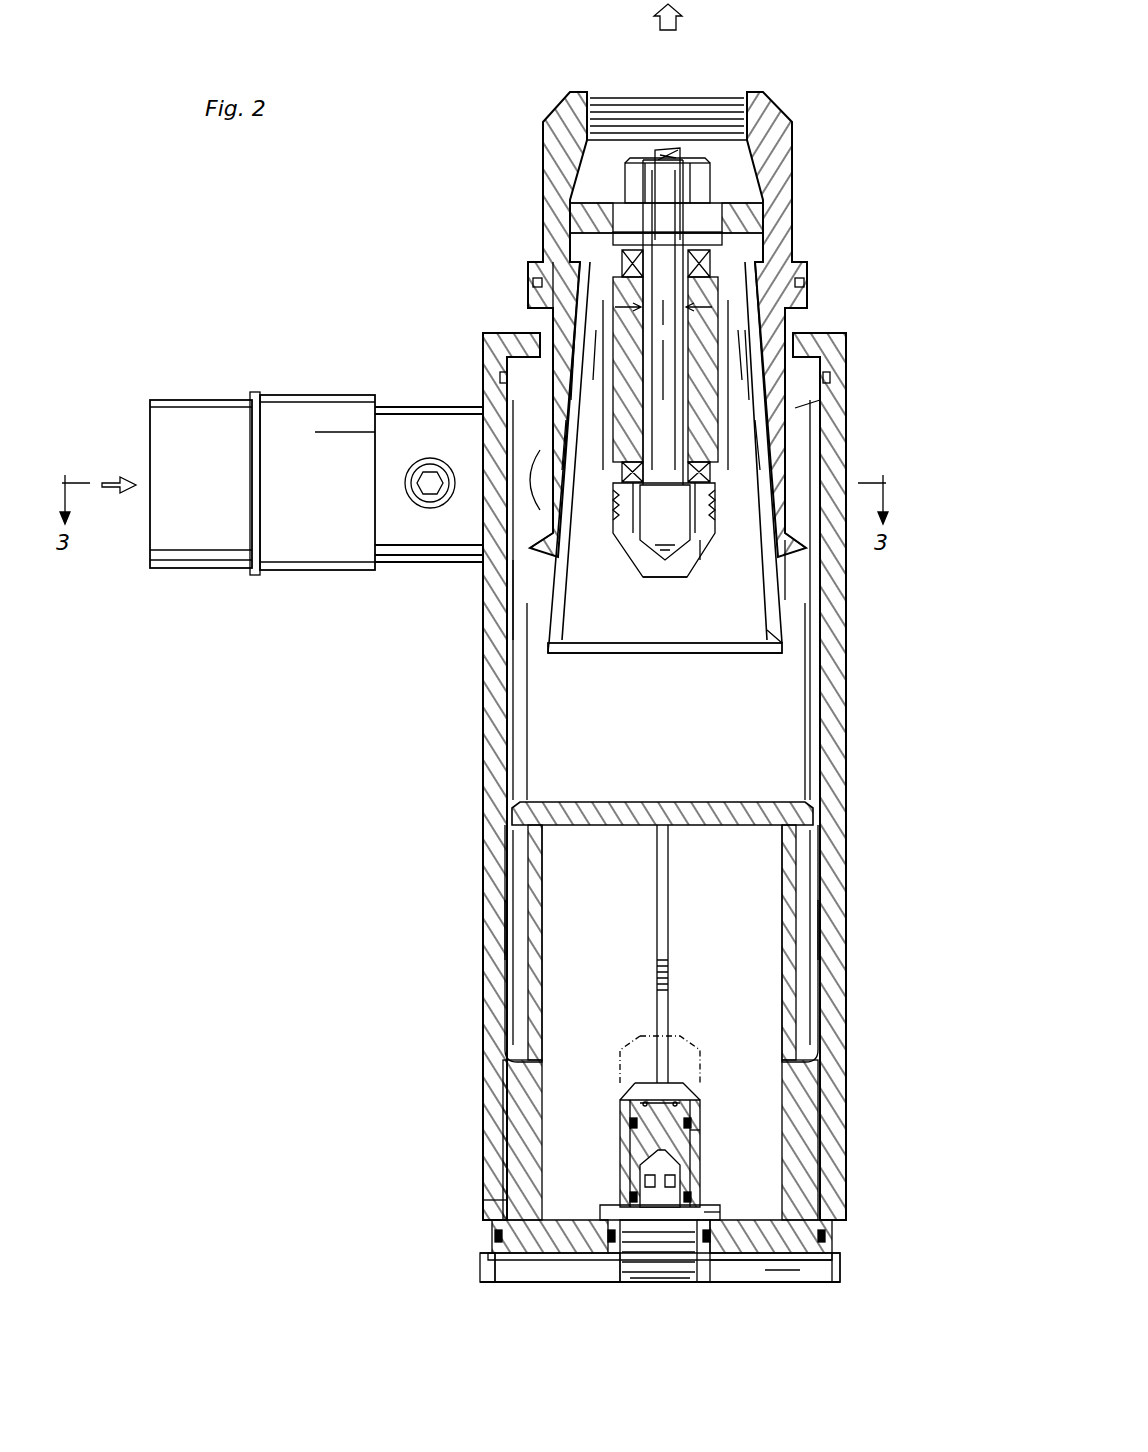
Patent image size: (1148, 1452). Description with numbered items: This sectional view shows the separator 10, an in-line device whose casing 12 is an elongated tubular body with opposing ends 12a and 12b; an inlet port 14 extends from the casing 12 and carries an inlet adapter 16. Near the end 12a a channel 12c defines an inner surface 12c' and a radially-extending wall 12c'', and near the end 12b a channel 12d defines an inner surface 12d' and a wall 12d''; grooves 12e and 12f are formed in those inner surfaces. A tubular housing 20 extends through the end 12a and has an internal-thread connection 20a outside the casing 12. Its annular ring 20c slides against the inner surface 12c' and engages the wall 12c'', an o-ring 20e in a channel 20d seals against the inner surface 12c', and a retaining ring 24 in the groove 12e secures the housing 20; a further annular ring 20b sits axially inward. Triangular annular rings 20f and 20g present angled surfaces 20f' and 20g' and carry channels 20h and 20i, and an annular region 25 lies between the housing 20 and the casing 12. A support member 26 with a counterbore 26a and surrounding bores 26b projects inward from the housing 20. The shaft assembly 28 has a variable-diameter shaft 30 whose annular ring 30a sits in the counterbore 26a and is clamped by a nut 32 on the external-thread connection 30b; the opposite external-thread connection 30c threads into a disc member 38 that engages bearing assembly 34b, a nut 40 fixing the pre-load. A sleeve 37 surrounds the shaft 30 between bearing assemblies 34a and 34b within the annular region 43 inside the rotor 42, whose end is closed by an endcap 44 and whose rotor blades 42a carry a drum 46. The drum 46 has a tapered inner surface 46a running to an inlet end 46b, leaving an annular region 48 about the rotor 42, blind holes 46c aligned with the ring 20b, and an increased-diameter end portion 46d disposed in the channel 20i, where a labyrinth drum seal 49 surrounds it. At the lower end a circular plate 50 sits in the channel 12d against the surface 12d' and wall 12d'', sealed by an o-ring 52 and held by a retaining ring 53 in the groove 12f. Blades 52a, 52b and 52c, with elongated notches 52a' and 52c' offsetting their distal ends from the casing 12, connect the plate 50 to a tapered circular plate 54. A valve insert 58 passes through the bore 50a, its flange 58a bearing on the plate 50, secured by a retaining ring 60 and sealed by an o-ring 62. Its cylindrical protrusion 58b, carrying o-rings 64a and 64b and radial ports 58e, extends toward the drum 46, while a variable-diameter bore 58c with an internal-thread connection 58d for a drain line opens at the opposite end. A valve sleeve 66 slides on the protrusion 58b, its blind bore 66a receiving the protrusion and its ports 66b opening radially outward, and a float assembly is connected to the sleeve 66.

The separator 10 is at (290, 176).
The casing 12 is at (478, 738).
The end 12a is at (530, 300).
The end 12b is at (528, 1284).
The channel 12c is at (858, 319).
The inner surface 12c' is at (484, 315).
The radially-extending wall 12c'' is at (462, 384).
The channel 12d is at (867, 1285).
The inner surface 12d' is at (457, 1285).
The radially-extending wall 12d'' is at (466, 1183).
The groove 12e is at (835, 378).
The groove 12f is at (835, 1256).
The inlet port 14 is at (400, 404).
The inlet adapter 16 is at (200, 400).
The housing 20 is at (780, 96).
The internal-thread connection 20a is at (612, 102).
The annular ring 20b is at (530, 258).
The annular ring 20c is at (828, 390).
The channel 20d is at (812, 412).
The o-ring 20e is at (508, 362).
The annular ring 20f is at (847, 442).
The surface 20f' is at (488, 432).
The annular ring 20g is at (848, 564).
The surface 20g' is at (486, 562).
The channel 20h is at (528, 470).
The channel 20i is at (512, 575).
The retaining ring 24 is at (830, 345).
The annular region 25 is at (817, 487).
The support member 26 is at (720, 186).
The counterbore 26a is at (740, 238).
The bores 26b is at (600, 212).
The shaft assembly 28 is at (632, 573).
The shaft 30 is at (660, 400).
The annular ring 30a is at (656, 160).
The external-thread connection 30b is at (680, 158).
The external-thread connection 30c is at (665, 552).
The nut 32 is at (680, 153).
The bearing assembly 34a is at (612, 240).
The bearing assembly 34b is at (712, 484).
The sleeve 37 is at (640, 432).
The disc member 38 is at (628, 522).
The nut 40 is at (690, 540).
The rotor 42 is at (735, 320).
The rotor blades 42a is at (800, 312).
The annular region 43 is at (663, 350).
The endcap 44 is at (700, 562).
The drum 46 is at (690, 658).
The tapered inner surface 46a is at (775, 652).
The inlet end 46b is at (642, 655).
The blind holes 46c is at (535, 280).
The increased-diameter end portion 46d is at (548, 652).
The annular region 48 is at (605, 492).
The drum seal 49 is at (790, 560).
The circular plate 50 is at (552, 1265).
The bore 50a is at (712, 1212).
The o-ring 52 is at (495, 1235).
The blade 52a is at (481, 1140).
The notch 52a' is at (462, 926).
The blade 52b is at (655, 872).
The blade 52c is at (842, 1140).
The notch 52c' is at (861, 930).
The retaining ring 53 is at (810, 1272).
The circular plate 54 is at (712, 805).
The valve insert 58 is at (712, 1282).
The flange 58a is at (612, 1207).
The cylindrical protrusion 58b is at (633, 1148).
The variable-diameter bore 58c is at (636, 1284).
The internal-thread connection 58d is at (680, 1284).
The ports 58e is at (645, 1183).
The retaining ring 60 is at (606, 1276).
The o-ring 62 is at (740, 1265).
The o-ring 64a is at (629, 1123).
The o-ring 64b is at (692, 1190).
The valve sleeve 66 is at (642, 1068).
The blind bore 66a is at (695, 1140).
The ports 66b is at (690, 1086).